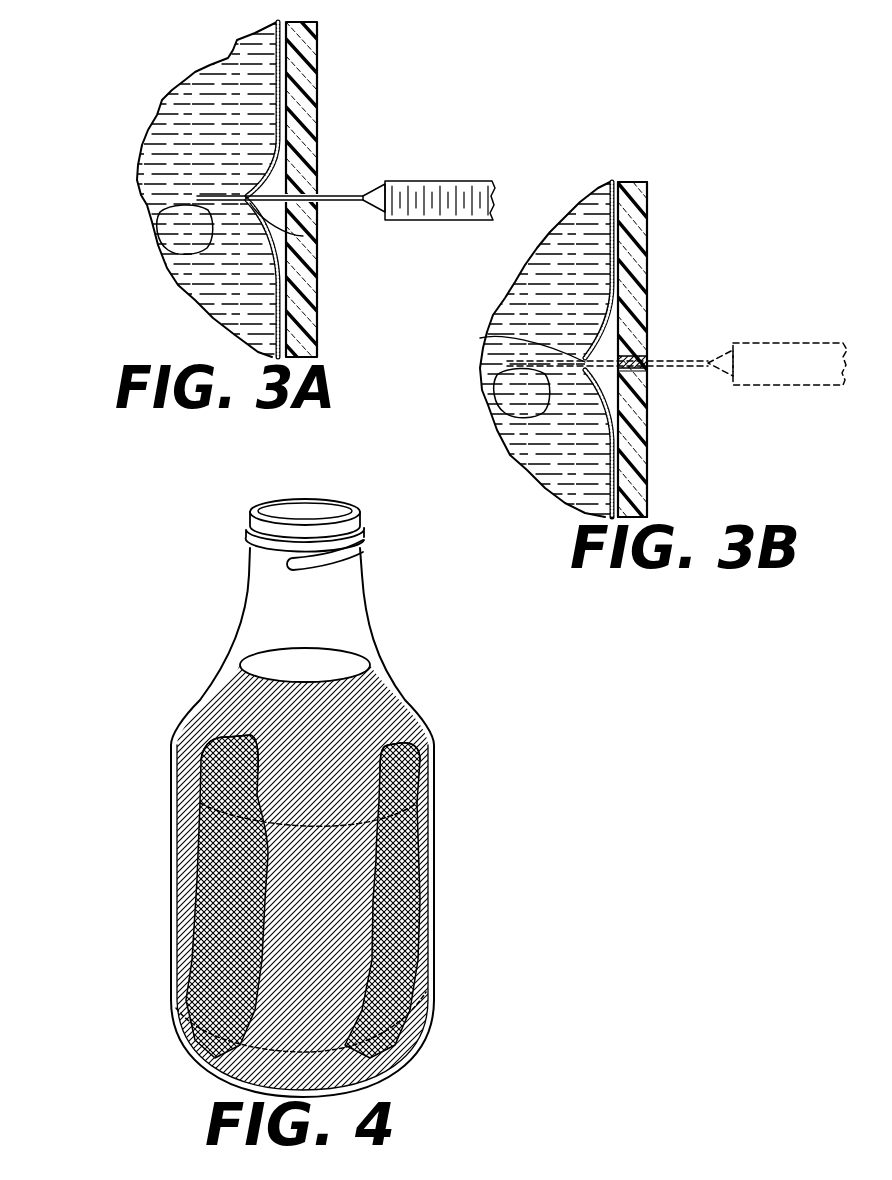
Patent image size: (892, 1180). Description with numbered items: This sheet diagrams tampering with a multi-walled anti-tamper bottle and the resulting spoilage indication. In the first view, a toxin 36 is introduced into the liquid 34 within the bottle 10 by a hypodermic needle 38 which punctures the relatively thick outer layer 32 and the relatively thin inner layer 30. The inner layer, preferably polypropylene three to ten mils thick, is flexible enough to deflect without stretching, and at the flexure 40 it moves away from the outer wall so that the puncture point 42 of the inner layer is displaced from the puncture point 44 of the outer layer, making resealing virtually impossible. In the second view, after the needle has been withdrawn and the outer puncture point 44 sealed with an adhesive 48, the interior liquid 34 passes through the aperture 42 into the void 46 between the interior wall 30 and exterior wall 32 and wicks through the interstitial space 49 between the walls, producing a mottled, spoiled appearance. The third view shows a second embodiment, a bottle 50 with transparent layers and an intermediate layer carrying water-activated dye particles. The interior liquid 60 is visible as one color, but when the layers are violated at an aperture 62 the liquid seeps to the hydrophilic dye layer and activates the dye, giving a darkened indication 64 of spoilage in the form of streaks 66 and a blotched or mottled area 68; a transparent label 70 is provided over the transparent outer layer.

In FIG. 3A, the bottle 10 is at (352, 100).
In FIG. 3B, the bottle 10 is at (700, 287).
In FIG. 3A, the inner layer 30 is at (282, 56).
In FIG. 3B, the inner layer 30 is at (645, 243).
In FIG. 3A, the outer layer 32 is at (317, 84).
In FIG. 3B, the outer layer 32 is at (647, 272).
In FIG. 3B, the liquid 34 is at (527, 310).
In FIG. 3A, the toxin 36 is at (178, 250).
In FIG. 3A, the hypodermic needle 38 is at (326, 194).
In FIG. 3B, the hypodermic needle 38 is at (777, 364).
In FIG. 3A, the flexure of inner layer 40 is at (280, 162).
In FIG. 3B, the flexure of inner layer 40 is at (620, 336).
In FIG. 3A, the puncture point of inner layer 42 is at (303, 236).
In FIG. 3B, the puncture point of inner layer 42 is at (483, 338).
In FIG. 3A, the puncture point of outer layer 44 is at (327, 202).
In FIG. 3B, the puncture point of outer layer 44 is at (649, 370).
In FIG. 3B, the void 46 is at (649, 401).
In FIG. 3B, the adhesive 48 is at (652, 362).
In FIG. 3B, the interstitial space 49 is at (650, 491).
In FIG. 4, the bottle 50 is at (394, 636).
In FIG. 4, the interior liquid 60 is at (355, 702).
In FIG. 4, the aperture 62 is at (342, 954).
In FIG. 4, the darkened indication 64 is at (398, 859).
In FIG. 4, the streaks 66 is at (406, 763).
In FIG. 4, the blotched or mottled area 68 is at (428, 994).
In FIG. 4, the transparent label 70 is at (168, 924).